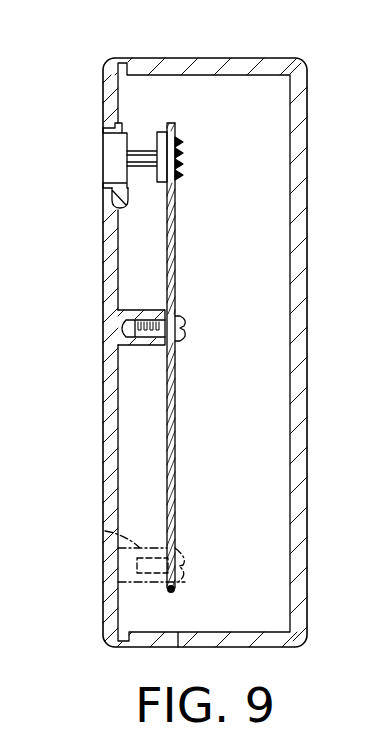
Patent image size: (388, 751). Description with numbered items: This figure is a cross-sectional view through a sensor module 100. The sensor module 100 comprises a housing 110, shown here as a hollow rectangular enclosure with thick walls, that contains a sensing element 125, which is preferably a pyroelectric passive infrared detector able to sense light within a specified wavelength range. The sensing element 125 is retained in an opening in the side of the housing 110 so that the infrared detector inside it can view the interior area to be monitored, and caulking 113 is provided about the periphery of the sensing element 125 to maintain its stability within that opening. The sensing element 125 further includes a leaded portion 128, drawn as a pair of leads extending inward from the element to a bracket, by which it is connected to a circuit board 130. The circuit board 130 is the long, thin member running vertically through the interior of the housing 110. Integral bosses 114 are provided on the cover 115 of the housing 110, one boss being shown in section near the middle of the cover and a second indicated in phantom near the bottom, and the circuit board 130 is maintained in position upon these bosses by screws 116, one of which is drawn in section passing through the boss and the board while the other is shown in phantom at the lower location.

The sensor module 100 is at (309, 110).
The housing 110 is at (262, 64).
The caulking 113 is at (116, 207).
The integral bosses 114 is at (152, 345).
The cover 115 is at (103, 447).
The screws 116 is at (183, 318).
The sensing element 125 is at (100, 137).
The leaded portion 128 is at (140, 149).
The circuit board 130 is at (176, 227).